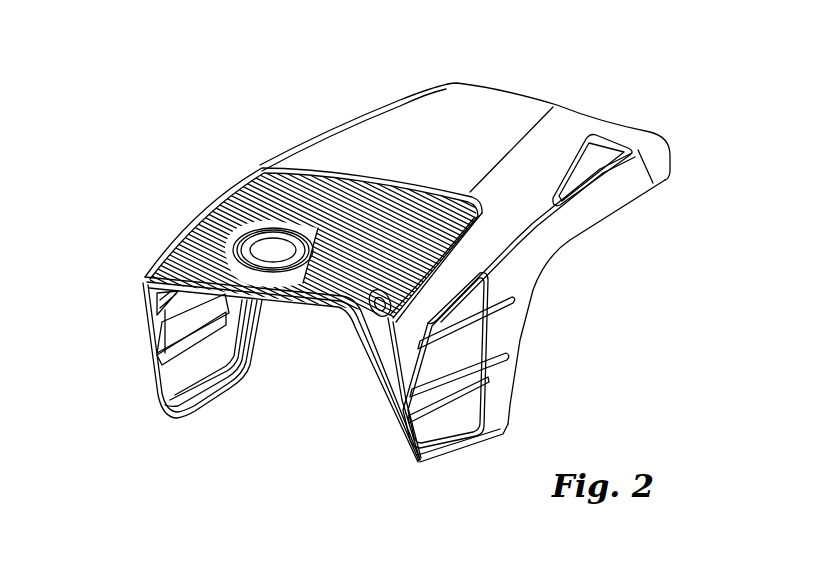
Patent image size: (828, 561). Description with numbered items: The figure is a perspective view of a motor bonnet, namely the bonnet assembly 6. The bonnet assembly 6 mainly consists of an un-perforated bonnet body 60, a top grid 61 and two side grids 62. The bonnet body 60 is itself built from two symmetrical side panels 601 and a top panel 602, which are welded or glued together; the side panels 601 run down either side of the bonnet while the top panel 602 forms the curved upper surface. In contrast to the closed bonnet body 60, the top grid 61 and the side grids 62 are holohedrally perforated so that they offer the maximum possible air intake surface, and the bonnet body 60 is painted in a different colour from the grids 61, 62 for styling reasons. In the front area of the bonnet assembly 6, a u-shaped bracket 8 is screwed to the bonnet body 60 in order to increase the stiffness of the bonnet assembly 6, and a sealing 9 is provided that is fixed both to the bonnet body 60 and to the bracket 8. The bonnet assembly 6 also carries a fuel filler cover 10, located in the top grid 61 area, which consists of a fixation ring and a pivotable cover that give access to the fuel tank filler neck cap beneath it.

The bonnet assembly 6 is at (214, 174).
The bonnet body 60 is at (492, 97).
The top panel 602 is at (413, 137).
The top grid 61 is at (190, 245).
The fuel filler cover 10 is at (273, 250).
The u-shaped bracket 8 is at (160, 330).
The sealing 9 is at (390, 393).
The side grids 62 is at (177, 377).
The side panels 601 is at (253, 327).